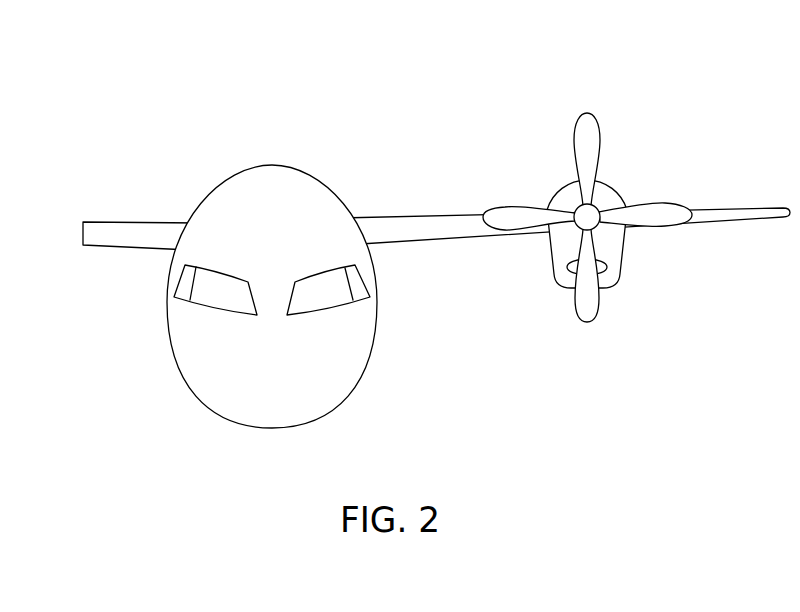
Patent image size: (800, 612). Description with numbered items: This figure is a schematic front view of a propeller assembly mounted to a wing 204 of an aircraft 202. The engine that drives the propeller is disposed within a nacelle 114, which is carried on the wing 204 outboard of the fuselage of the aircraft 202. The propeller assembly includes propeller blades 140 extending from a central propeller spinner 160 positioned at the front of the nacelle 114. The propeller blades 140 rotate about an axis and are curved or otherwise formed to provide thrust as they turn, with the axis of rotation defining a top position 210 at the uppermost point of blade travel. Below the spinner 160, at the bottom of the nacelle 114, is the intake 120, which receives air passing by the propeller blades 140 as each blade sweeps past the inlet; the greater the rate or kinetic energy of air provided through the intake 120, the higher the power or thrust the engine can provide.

The top position 210 is at (636, 82).
The aircraft 202 is at (357, 377).
The wing 204 is at (402, 216).
The nacelle 114 is at (607, 198).
The propeller blades 140 is at (497, 206).
The propeller spinner 160 is at (575, 223).
The intake 120 is at (571, 277).